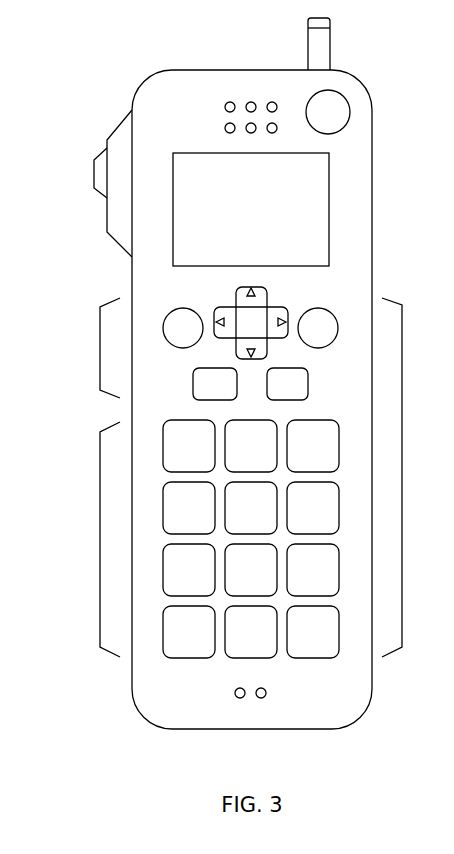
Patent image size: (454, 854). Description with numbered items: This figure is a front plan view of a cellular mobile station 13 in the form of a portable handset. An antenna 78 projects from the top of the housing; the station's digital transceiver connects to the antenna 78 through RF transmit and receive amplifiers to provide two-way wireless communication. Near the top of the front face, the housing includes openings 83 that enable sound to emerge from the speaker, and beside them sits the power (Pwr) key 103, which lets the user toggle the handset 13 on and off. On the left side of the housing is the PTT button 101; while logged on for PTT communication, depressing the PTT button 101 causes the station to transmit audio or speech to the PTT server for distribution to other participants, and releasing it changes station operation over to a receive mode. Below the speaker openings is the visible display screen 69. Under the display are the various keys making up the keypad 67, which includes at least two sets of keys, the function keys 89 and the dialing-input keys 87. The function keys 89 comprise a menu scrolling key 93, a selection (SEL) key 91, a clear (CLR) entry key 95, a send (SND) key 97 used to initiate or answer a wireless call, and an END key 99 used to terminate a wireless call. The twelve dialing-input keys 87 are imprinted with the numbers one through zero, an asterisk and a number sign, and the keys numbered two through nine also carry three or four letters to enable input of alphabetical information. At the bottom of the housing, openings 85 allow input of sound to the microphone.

The mobile station 13 is at (130, 108).
The antenna 78 is at (308, 62).
The openings 83 is at (226, 100).
The power key 103 is at (352, 100).
The PTT button 101 is at (93, 170).
The display screen 69 is at (331, 192).
The menu scrolling key 93 is at (290, 306).
The selection key 91 is at (343, 313).
The clear entry key 95 is at (162, 314).
The send key 97 is at (192, 387).
The END key 99 is at (309, 388).
The function keys 89 is at (100, 348).
The dialing-input keys 87 is at (100, 528).
The keypad 67 is at (402, 468).
The openings 85 is at (233, 700).